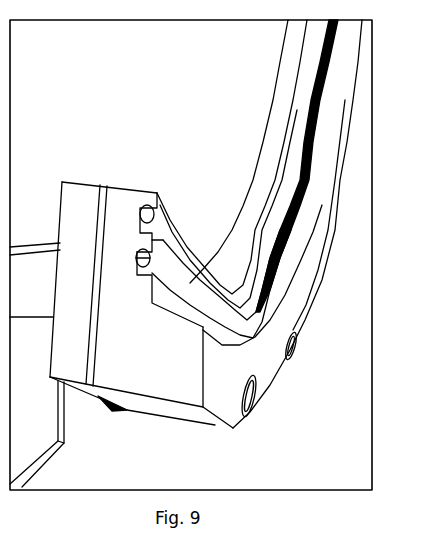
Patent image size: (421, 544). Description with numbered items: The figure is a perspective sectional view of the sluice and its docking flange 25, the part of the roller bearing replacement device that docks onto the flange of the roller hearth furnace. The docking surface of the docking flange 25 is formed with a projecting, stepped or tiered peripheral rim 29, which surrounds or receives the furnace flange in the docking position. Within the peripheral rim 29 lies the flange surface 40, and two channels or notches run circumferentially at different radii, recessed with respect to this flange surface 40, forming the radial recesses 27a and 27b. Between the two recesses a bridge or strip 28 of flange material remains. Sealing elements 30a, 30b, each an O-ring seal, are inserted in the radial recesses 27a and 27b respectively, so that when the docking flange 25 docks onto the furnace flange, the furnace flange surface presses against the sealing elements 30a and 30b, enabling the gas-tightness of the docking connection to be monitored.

The docking flange 25 is at (297, 245).
The radial recess 27a is at (132, 326).
The radial recess 27b is at (177, 209).
The bridge or strip 28 is at (107, 155).
The peripheral rim 29 is at (240, 398).
The sealing element 30a is at (167, 164).
The sealing element 30b is at (209, 212).
The flange surface 40 is at (331, 166).